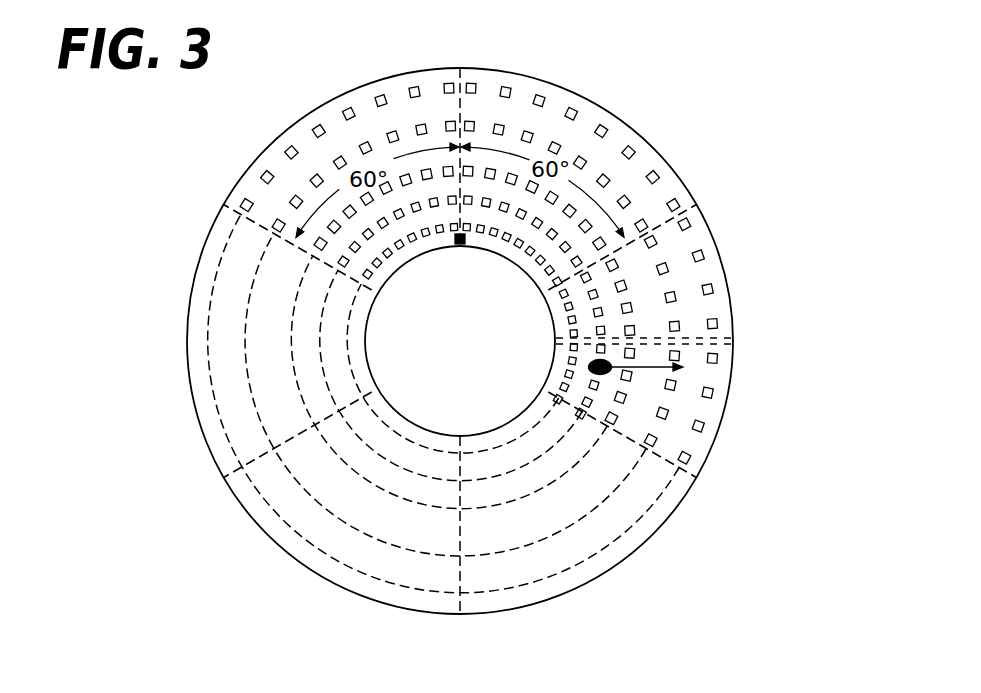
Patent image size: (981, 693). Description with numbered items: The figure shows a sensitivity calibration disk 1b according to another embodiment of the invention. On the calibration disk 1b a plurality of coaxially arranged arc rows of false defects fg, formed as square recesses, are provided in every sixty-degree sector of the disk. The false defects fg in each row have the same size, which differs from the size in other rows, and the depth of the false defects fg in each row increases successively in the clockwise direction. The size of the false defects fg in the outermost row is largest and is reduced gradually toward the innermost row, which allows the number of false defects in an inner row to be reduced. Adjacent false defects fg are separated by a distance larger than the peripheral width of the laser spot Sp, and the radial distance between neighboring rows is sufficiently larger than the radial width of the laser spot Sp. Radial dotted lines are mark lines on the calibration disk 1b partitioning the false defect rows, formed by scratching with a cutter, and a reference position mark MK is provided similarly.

The calibration disk 1b is at (252, 160).
The false defects fg is at (295, 148).
The reference position mark MK is at (460, 244).
The laser spot Sp is at (596, 386).
The radial direction R is at (655, 370).